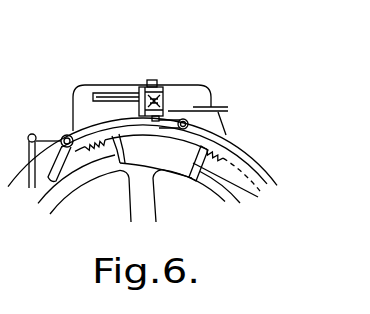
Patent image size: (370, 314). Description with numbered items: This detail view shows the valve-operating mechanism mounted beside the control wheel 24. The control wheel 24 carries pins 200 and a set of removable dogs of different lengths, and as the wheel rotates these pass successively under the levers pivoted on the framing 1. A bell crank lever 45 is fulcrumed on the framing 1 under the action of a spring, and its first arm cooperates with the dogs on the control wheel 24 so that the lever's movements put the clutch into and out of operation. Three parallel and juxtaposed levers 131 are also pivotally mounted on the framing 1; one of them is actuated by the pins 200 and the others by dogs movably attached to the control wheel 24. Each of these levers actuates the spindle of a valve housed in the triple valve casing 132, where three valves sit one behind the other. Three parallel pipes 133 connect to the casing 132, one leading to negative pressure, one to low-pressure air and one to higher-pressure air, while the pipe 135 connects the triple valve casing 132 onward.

The framing 1 is at (82, 107).
The control wheel 24 is at (218, 193).
The bell crank lever 45 is at (70, 168).
The parallel juxtaposed levers 131 is at (172, 125).
The triple valve casing 132 is at (147, 87).
The pipes 133 is at (198, 111).
The pipe 135 is at (109, 94).
The pins 200 is at (177, 136).